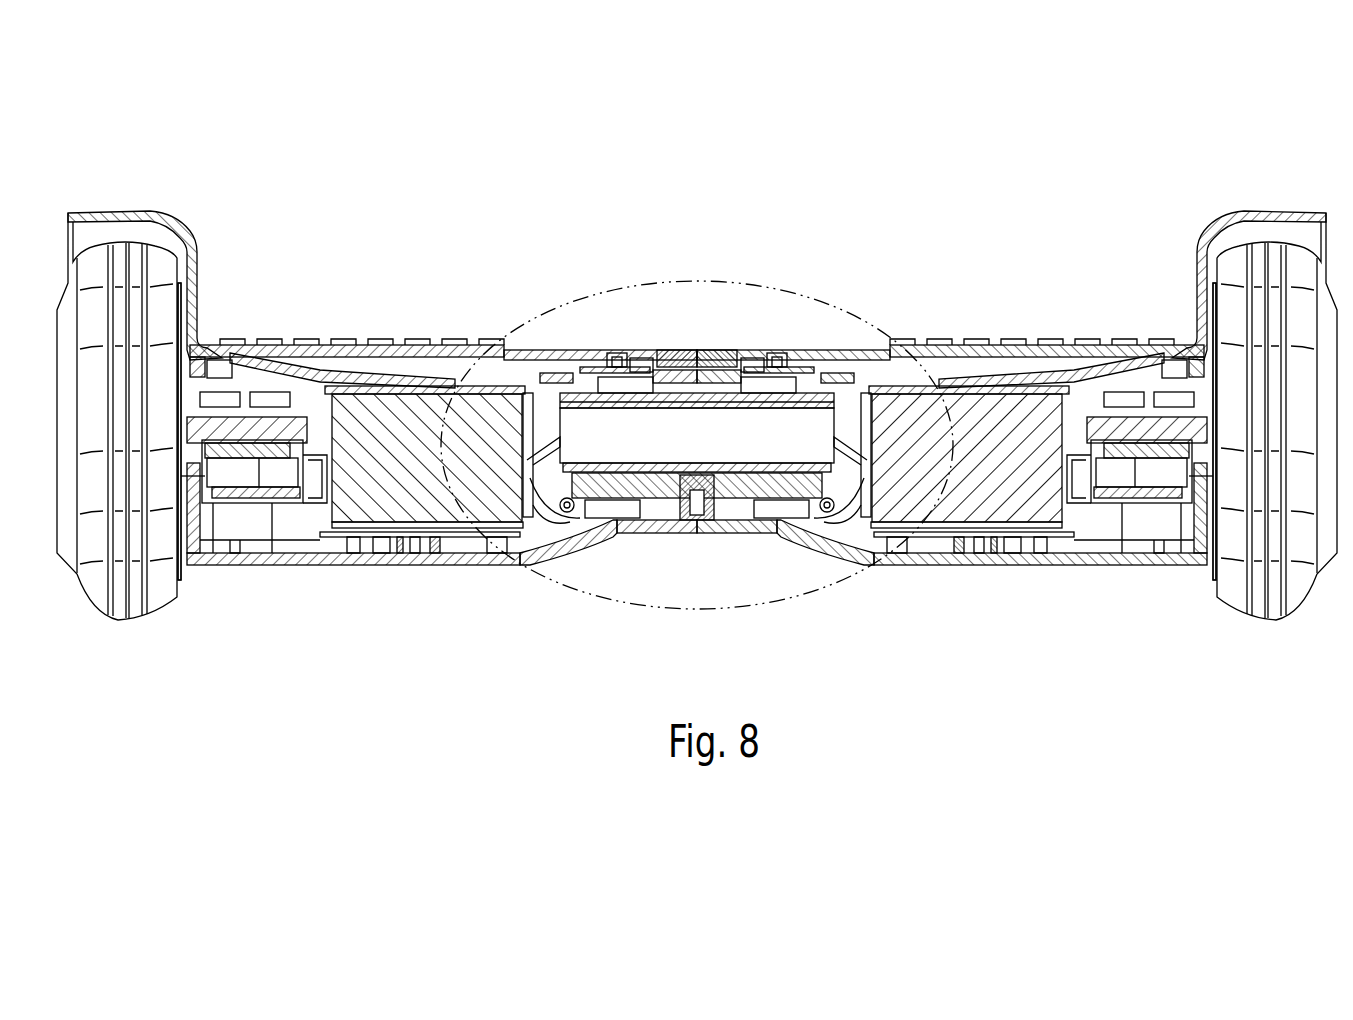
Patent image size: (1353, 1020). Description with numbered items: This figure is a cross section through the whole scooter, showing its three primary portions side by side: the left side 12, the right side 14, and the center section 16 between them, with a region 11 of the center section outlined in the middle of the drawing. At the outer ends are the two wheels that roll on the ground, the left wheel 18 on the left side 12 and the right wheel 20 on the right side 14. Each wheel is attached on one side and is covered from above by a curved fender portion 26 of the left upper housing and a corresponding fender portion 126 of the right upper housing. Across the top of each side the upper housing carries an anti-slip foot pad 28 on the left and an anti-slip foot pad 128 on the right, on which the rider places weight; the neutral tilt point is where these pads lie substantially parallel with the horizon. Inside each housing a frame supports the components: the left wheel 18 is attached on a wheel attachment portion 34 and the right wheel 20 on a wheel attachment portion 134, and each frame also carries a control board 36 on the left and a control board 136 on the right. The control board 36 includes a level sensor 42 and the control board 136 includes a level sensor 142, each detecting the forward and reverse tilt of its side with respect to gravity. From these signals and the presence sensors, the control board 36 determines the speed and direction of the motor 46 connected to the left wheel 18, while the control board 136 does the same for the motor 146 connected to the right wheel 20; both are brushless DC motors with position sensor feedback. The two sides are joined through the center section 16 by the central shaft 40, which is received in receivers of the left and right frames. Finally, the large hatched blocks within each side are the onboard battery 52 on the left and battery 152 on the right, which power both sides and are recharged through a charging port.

The central connecting portion 11 is at (802, 292).
The left side 12 is at (406, 285).
The right side 14 is at (980, 276).
The center section 16 is at (677, 315).
The left wheel 18 is at (94, 600).
The right wheel 20 is at (1295, 600).
The fender portion 26 is at (173, 212).
The anti-slip foot pad 28 is at (345, 345).
The wheel attachment portion 34 is at (235, 457).
The control board 36 is at (280, 477).
The central shaft 40 is at (672, 475).
The level sensor 42 is at (262, 475).
The motor 46 is at (183, 557).
The battery 52 is at (380, 492).
The fender portion 126 is at (1224, 212).
The anti-slip foot pad 128 is at (1058, 345).
The wheel attachment portion 134 is at (1158, 450).
The control board 136 is at (1112, 477).
The level sensor 142 is at (1136, 480).
The motor 146 is at (1207, 560).
The battery 152 is at (978, 492).